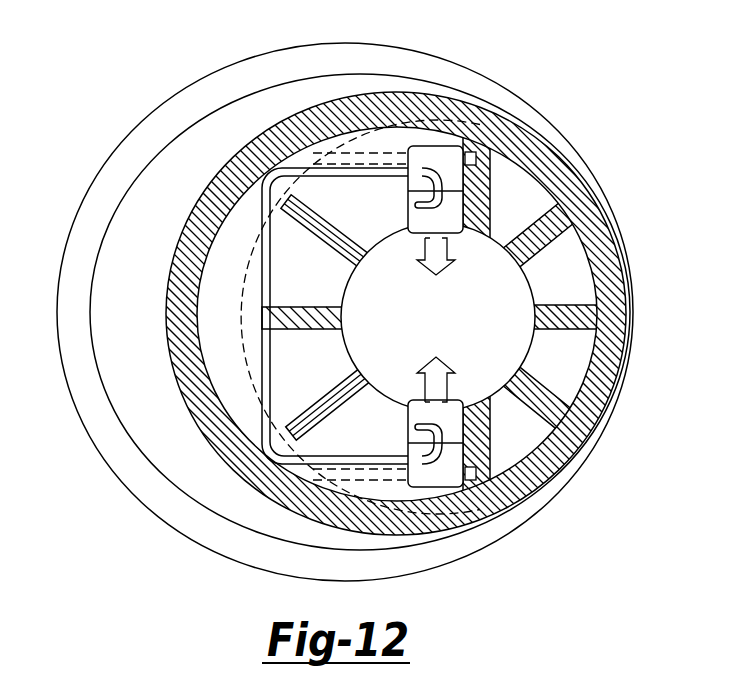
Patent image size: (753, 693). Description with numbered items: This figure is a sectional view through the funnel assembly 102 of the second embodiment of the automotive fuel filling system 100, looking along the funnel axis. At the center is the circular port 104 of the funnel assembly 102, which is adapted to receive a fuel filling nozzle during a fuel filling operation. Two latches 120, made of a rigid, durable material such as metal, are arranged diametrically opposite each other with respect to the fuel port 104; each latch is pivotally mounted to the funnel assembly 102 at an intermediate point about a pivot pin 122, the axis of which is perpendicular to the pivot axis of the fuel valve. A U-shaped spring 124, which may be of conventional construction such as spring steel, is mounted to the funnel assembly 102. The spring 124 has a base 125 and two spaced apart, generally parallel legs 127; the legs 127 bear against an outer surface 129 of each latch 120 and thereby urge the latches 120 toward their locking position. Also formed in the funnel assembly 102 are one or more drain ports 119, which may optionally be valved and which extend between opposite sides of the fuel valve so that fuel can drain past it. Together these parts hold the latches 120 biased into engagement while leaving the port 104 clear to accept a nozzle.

The fuel filling system 100 is at (626, 300).
The funnel assembly 102 is at (608, 342).
The circular port 104 is at (343, 348).
The drain ports 119 is at (577, 272).
The latches 120 is at (448, 224).
The pivot pin 122 is at (474, 157).
The U-shaped spring 124 is at (290, 170).
The base 125 is at (266, 277).
The legs 127 is at (352, 172).
The outer surface 129 is at (412, 207).